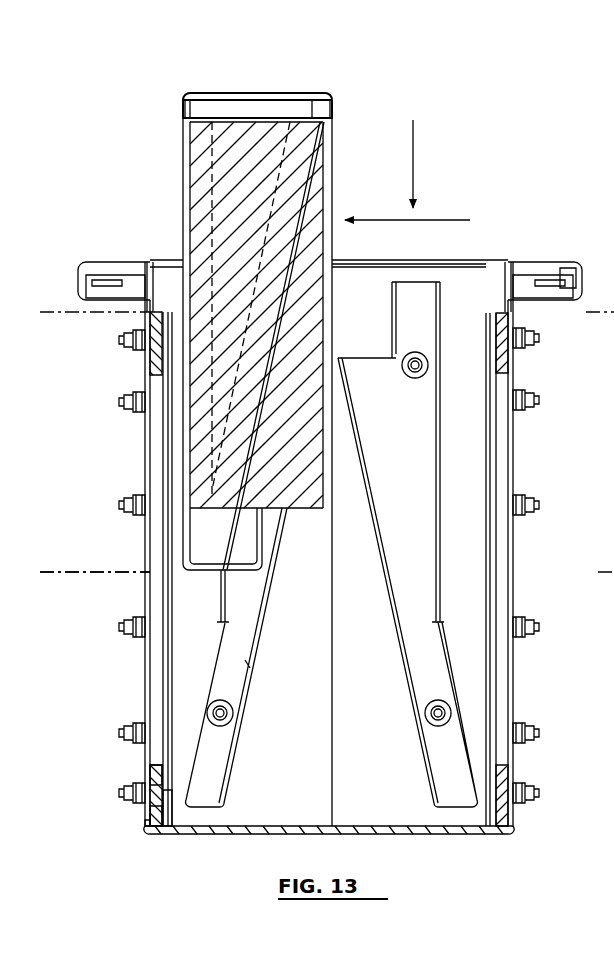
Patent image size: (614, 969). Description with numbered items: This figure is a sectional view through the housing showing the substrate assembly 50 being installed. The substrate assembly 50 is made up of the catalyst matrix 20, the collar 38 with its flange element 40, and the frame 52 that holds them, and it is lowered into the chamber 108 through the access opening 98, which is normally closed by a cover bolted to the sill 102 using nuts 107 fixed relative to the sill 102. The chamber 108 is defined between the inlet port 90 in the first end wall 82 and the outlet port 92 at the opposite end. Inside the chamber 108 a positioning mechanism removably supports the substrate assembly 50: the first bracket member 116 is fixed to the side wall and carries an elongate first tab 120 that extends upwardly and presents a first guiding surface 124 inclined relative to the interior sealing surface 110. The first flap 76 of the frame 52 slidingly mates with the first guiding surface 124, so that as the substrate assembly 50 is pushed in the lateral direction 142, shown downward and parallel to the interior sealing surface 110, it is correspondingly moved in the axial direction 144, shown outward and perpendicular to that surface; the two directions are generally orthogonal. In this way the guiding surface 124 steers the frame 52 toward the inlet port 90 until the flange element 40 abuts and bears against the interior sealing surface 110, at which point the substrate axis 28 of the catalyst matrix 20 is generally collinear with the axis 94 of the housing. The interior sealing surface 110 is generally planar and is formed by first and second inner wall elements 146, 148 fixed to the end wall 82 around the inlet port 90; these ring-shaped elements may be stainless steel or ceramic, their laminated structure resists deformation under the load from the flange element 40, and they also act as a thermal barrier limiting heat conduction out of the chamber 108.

The catalyst matrix 20 is at (228, 172).
The substrate axis 28 is at (76, 292).
The collar 38 is at (182, 103).
The flange element 40 is at (183, 118).
The substrate assembly 50 is at (289, 90).
The frame 52 is at (212, 93).
The first flap 76 is at (280, 324).
The first end wall 82 is at (152, 770).
The inlet port 90 is at (190, 592).
The outlet port 92 is at (492, 594).
The axis of the housing 94 is at (68, 562).
The access opening 98 is at (447, 268).
The sill 102 is at (558, 262).
The nuts 107 is at (546, 296).
The chamber 108 is at (464, 470).
The interior sealing surface 110 is at (178, 797).
The first bracket member 116 is at (232, 687).
The first tab 120 is at (266, 623).
The first guiding surface 124 is at (246, 668).
The lateral direction 142 is at (414, 148).
The axial direction 144 is at (433, 220).
The first inner wall element 146 is at (160, 812).
The second inner wall element 148 is at (171, 826).